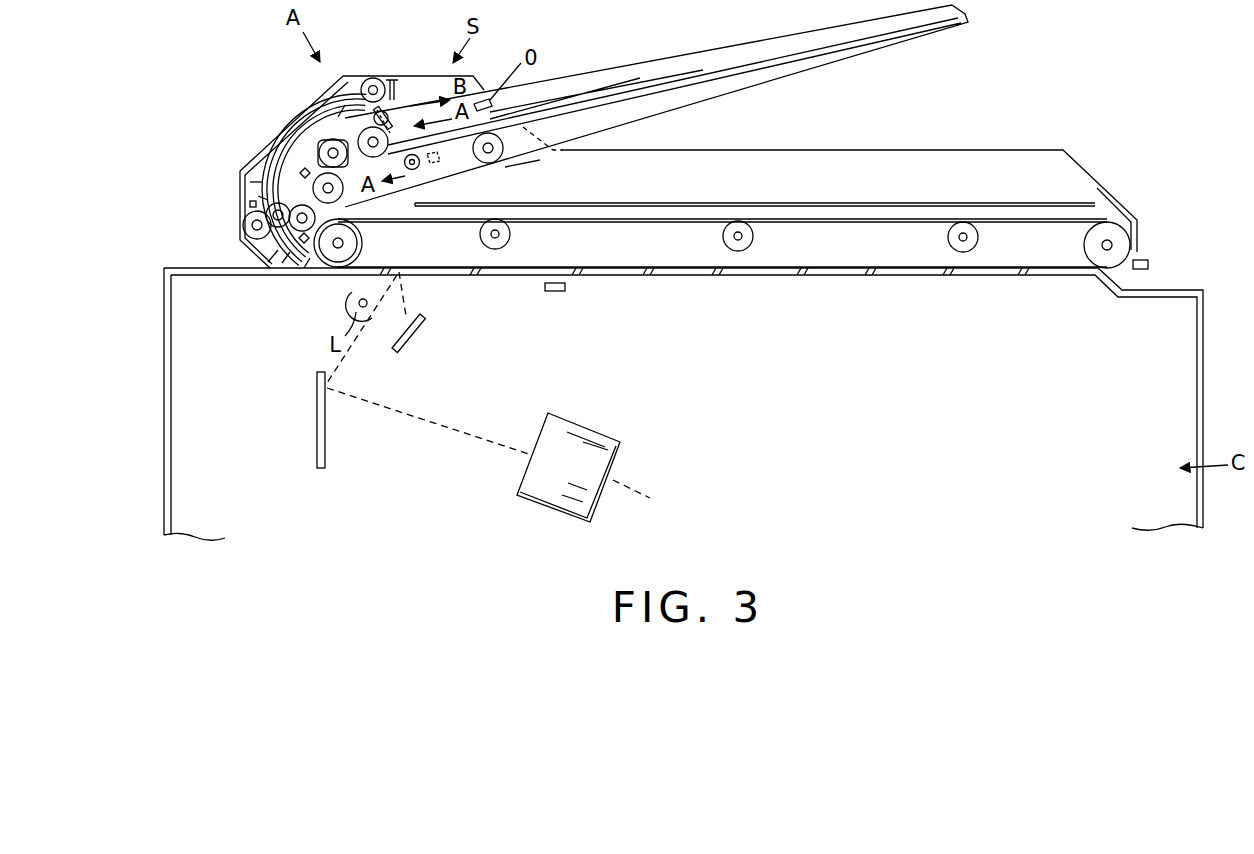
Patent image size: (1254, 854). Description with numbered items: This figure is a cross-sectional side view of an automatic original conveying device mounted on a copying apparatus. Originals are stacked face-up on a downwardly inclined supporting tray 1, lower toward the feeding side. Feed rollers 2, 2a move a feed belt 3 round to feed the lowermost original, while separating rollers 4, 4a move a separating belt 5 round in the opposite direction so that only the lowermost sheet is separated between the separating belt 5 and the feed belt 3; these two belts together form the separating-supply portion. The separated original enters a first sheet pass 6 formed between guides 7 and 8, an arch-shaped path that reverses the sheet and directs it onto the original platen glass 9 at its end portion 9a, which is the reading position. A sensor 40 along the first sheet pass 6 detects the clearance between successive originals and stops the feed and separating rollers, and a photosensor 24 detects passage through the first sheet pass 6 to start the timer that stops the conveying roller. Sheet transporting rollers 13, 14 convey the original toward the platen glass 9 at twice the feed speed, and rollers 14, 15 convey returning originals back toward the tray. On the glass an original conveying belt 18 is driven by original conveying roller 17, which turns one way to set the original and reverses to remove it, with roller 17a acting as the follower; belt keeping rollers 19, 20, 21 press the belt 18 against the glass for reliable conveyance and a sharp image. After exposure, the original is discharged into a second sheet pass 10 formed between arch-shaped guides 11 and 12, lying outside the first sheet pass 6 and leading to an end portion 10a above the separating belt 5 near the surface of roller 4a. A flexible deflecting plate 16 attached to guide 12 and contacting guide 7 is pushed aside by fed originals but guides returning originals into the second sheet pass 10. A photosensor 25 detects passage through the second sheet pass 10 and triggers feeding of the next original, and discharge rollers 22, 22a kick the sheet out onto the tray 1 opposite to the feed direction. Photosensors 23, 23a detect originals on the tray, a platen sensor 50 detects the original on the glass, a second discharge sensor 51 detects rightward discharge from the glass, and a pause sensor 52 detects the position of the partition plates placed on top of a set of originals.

The supporting tray 1 is at (606, 103).
The feed roller 2 is at (343, 193).
The feed roller 2a is at (522, 148).
The feed belt 3 is at (500, 160).
The separating roller 4 is at (337, 147).
The separating roller 4a is at (345, 135).
The separating belt 5 is at (350, 112).
The first sheet pass 6 is at (250, 182).
The guide 7 is at (262, 222).
The guide 8 is at (258, 196).
The original platen glass 9 is at (400, 315).
The end portion of platen glass 9a is at (330, 272).
The second sheet pass 10 is at (300, 148).
The end portion of second sheet pass 10a is at (385, 100).
The arch-shaped guide 11 is at (285, 160).
The arch-shaped guide 12 is at (330, 150).
The sheet transporting roller 13 is at (282, 263).
The sheet transporting roller 14 is at (268, 262).
The sheet transporting roller 15 is at (250, 236).
The flexible deflecting plate 16 is at (304, 268).
The original conveying roller 17 is at (347, 262).
The original conveying roller 17a is at (1099, 266).
The belt 18 is at (662, 221).
The belt keeping roller 19 is at (511, 236).
The belt keeping roller 20 is at (753, 237).
The belt keeping roller 21 is at (979, 238).
The discharge roller 22 is at (371, 79).
The discharge roller 22a is at (406, 97).
The photosensor 23 is at (379, 110).
The photosensor 23a is at (445, 158).
The photosensor 24 is at (300, 262).
The photosensor 25 is at (250, 204).
The sensor 40 is at (272, 178).
The platen sensor 50 is at (392, 103).
The second discharge sensor 51 is at (1150, 264).
The pause sensor 52 is at (505, 100).